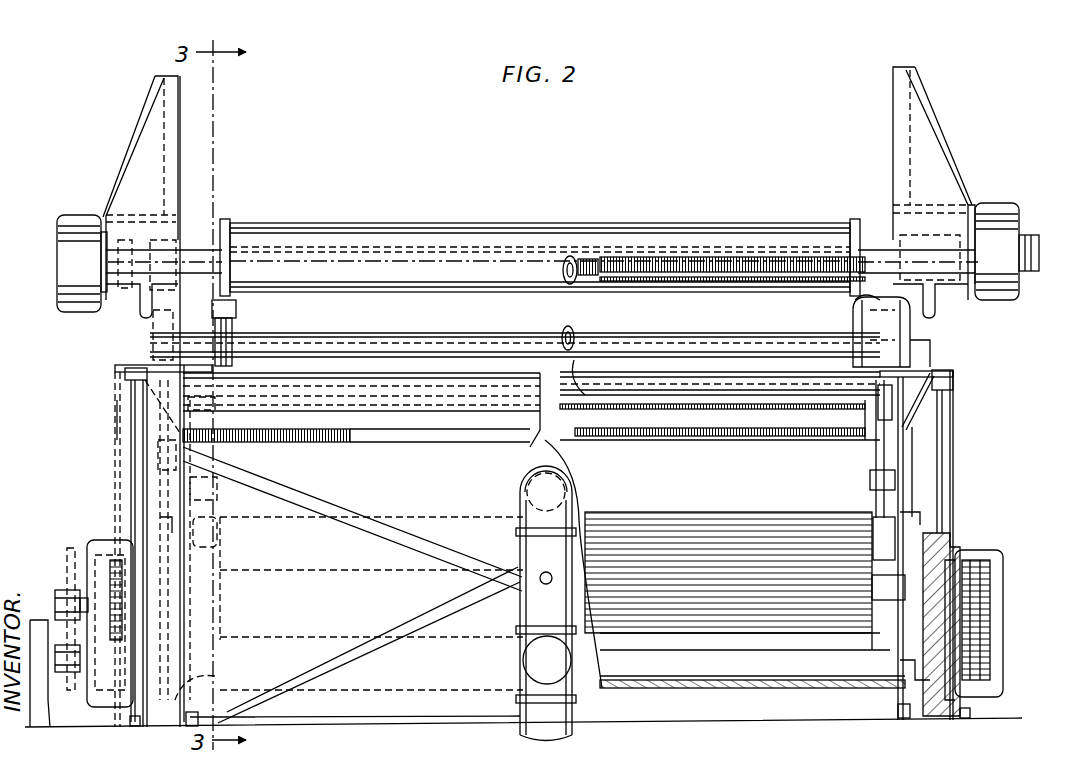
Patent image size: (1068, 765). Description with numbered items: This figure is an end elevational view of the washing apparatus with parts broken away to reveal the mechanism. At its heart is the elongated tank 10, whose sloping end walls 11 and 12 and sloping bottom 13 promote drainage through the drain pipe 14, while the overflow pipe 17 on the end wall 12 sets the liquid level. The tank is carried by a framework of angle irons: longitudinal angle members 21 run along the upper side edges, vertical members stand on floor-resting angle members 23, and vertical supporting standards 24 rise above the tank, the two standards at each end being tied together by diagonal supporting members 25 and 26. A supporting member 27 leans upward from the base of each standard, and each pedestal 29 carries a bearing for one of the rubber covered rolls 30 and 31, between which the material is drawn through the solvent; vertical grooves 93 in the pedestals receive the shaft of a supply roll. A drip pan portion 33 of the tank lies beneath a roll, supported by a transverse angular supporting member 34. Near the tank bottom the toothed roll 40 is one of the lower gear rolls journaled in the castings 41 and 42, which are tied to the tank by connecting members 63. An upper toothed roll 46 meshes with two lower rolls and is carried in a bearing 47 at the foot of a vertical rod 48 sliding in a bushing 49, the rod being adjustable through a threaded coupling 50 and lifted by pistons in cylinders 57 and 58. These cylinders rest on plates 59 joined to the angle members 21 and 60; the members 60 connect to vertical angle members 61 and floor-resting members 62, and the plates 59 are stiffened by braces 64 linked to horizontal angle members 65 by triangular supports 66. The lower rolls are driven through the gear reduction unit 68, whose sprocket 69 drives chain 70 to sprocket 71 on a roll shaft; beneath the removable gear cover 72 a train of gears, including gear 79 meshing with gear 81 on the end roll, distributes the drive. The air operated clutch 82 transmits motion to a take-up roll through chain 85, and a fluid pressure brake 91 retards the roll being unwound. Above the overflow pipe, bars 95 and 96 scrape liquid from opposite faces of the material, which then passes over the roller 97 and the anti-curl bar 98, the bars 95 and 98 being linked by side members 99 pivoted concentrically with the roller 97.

The tank 10 is at (366, 375).
The sloping end wall 11 is at (658, 660).
The sloping end wall 12 is at (287, 610).
The sloping bottom 13 is at (660, 683).
The drain pipe 14 is at (523, 649).
The overflow pipe 17 is at (522, 476).
The longitudinally extending angle member 21 is at (125, 365).
The longitudinally extending angle member 23 is at (190, 726).
The vertical supporting standard 24 is at (925, 343).
The diagonal supporting member 25 is at (385, 504).
The diagonal supporting member 26 is at (456, 598).
The supporting member 27 is at (160, 335).
The pedestal 29 is at (122, 166).
The rubber covered roll 30 is at (500, 240).
The rubber covered roll 31 is at (702, 236).
The drip pan portion 33 is at (448, 394).
The angular supporting member 34 is at (320, 444).
The fluted or toothed roll 40 is at (720, 631).
The longitudinally extending casting 41 is at (145, 545).
The longitudinally extending casting 42 is at (940, 535).
The toothed roll 46 is at (766, 513).
The bearing 47 is at (873, 522).
The vertically extending rod 48 is at (875, 455).
The bushing 49 is at (870, 480).
The threaded coupling 50 is at (882, 425).
The cylinder 57 is at (230, 336).
The cylinder 58 is at (900, 315).
The longitudinally extending plate 59 is at (255, 366).
The longitudinally extending angle member 60 is at (122, 392).
The vertically extending angle member 61 is at (135, 450).
The longitudinally extending angle member 62 is at (133, 724).
The connecting member 63 is at (192, 677).
The brace 64 is at (160, 425).
The horizontally extending angle member 65 is at (165, 525).
The vertically extending supporting member 66 is at (158, 470).
The gear reduction unit 68 is at (40, 630).
The sprocket 69 is at (62, 678).
The chain 70 is at (68, 562).
The sprocket 71 is at (68, 592).
The gear cover 72 is at (105, 560).
The gear 79 is at (990, 665).
The gear 81 is at (980, 565).
The air operated clutch 82 is at (68, 257).
The chain 85 is at (123, 425).
The fluid pressure operated brake 91 is at (1005, 226).
The vertically extending groove 93 is at (166, 134).
The bar 95 is at (576, 434).
The bar 96 is at (585, 395).
The roller 97 is at (568, 336).
The bar 98 is at (596, 280).
The side member 99 is at (214, 306).